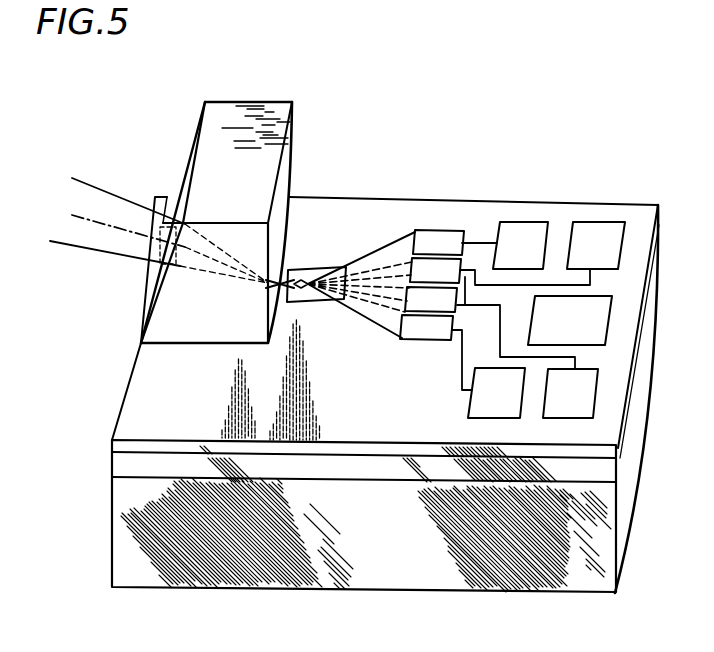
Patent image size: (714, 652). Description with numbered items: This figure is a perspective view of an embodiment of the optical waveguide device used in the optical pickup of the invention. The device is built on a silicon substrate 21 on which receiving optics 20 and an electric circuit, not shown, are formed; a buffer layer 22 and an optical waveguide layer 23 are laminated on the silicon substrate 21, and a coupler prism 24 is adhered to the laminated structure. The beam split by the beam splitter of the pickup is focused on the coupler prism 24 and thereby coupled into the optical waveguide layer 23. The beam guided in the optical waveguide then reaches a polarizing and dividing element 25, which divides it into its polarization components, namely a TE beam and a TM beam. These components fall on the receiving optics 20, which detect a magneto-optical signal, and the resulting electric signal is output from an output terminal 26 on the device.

The receiving optics 20 is at (437, 327).
The silicon substrate 21 is at (130, 542).
The buffer layer 22 is at (130, 469).
The optical waveguide layer 23 is at (130, 447).
The coupler prism 24 is at (177, 142).
The polarizing and dividing element 25 is at (313, 262).
The output terminal 26 is at (595, 245).